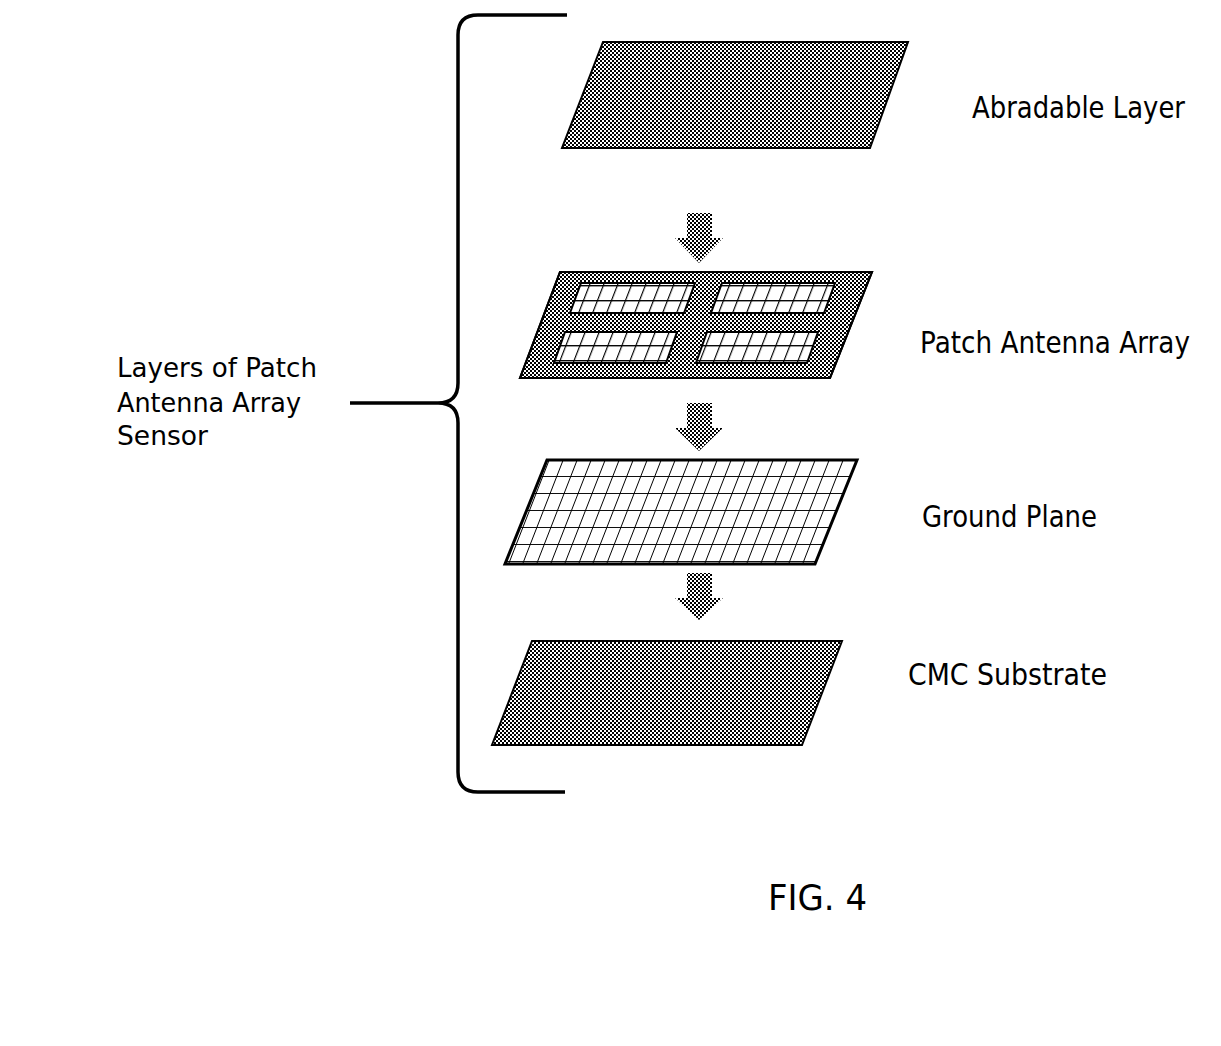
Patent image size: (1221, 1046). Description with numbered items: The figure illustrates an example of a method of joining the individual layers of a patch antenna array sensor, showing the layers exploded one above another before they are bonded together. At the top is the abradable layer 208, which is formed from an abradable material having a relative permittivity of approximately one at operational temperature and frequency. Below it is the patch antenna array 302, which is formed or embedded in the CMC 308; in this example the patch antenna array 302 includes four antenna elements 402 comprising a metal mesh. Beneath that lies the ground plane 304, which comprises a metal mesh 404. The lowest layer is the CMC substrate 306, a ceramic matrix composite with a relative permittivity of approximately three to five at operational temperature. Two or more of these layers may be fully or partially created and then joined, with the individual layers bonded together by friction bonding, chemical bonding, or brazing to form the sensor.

The abradable layer 208 is at (886, 123).
The patch antenna array 302 is at (838, 358).
The ground plane 304 is at (835, 529).
The CMC substrate 306 is at (826, 690).
The CMC 308 is at (852, 283).
The antenna elements 402 is at (603, 295).
The metal mesh 404 is at (810, 466).